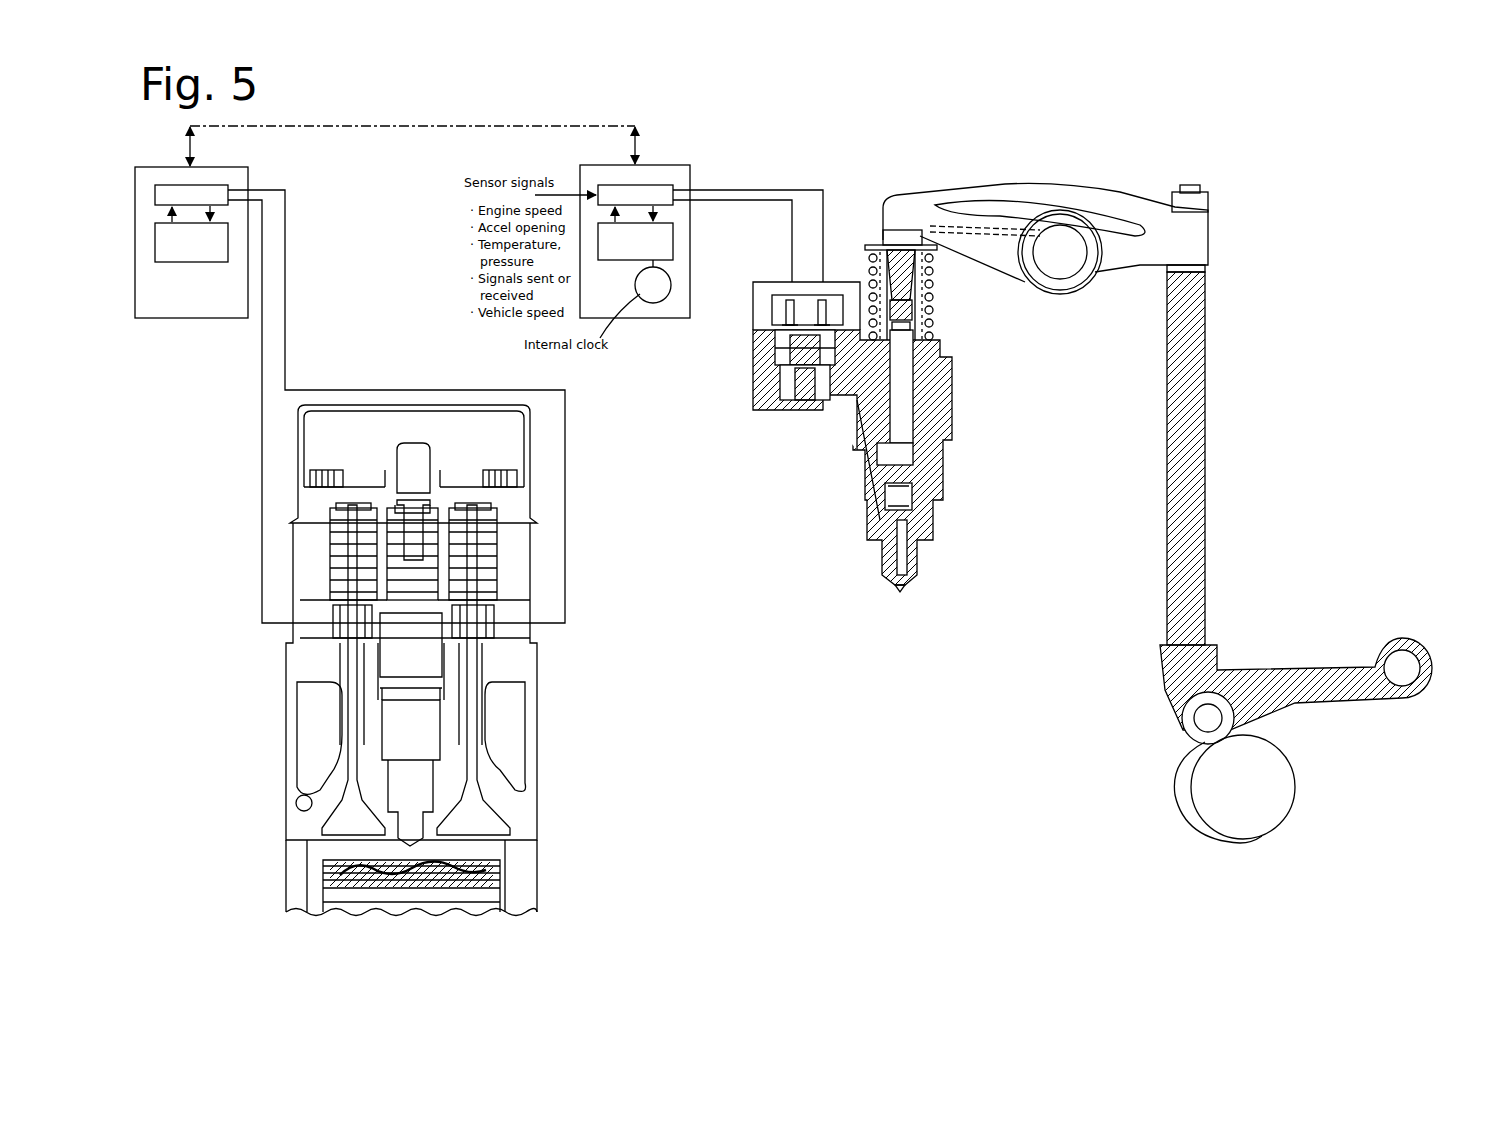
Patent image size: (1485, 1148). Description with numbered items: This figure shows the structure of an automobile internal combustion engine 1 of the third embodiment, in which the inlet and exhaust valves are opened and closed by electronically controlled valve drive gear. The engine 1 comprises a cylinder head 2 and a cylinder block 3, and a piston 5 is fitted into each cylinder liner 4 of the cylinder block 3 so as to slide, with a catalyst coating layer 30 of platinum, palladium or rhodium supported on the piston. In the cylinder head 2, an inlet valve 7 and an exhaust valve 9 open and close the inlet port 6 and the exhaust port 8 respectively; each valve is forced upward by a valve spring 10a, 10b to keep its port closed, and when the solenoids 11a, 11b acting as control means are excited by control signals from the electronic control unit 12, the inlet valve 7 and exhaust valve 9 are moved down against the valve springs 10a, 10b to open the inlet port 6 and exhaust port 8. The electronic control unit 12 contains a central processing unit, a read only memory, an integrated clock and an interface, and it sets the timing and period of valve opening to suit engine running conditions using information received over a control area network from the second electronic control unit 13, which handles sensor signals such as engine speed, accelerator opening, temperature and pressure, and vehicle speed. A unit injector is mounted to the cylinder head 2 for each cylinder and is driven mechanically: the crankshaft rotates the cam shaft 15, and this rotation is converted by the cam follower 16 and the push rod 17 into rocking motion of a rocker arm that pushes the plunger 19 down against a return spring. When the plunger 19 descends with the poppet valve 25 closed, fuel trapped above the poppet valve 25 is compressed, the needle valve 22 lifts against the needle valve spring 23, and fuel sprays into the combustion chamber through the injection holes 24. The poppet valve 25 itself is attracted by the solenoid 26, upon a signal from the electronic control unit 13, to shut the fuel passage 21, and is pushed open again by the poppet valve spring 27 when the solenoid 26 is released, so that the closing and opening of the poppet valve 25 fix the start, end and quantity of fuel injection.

The internal combustion engine 1 is at (550, 730).
The cylinder head 2 is at (290, 732).
The cylinder block 3 is at (294, 880).
The cylinder liner 4 is at (512, 876).
The piston 5 is at (466, 885).
The inlet port 6 is at (330, 778).
The inlet valve 7 is at (352, 818).
The exhaust port 8 is at (512, 780).
The exhaust valve 9 is at (480, 805).
The valve spring 10a is at (330, 534).
The valve spring 10b is at (497, 543).
The solenoid 11a is at (335, 620).
The solenoid 11b is at (495, 613).
The electronic control unit 12 is at (155, 318).
The electronic control unit 13 is at (652, 318).
The cam shaft 15 is at (1188, 812).
The cam follower 16 is at (1225, 722).
The push rod 17 is at (1165, 482).
The plunger 19 is at (905, 365).
The fuel passage 21 is at (850, 405).
The needle valve 22 is at (917, 558).
The needle valve spring 23 is at (935, 503).
The injection holes 24 is at (893, 586).
The poppet valve 25 is at (760, 395).
The solenoid 26 is at (772, 317).
The poppet valve spring 27 is at (760, 360).
The catalyst coating layer 30 is at (378, 873).